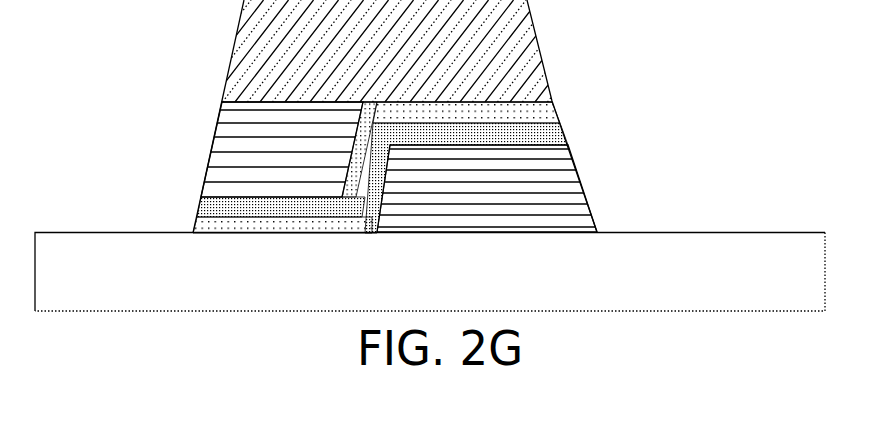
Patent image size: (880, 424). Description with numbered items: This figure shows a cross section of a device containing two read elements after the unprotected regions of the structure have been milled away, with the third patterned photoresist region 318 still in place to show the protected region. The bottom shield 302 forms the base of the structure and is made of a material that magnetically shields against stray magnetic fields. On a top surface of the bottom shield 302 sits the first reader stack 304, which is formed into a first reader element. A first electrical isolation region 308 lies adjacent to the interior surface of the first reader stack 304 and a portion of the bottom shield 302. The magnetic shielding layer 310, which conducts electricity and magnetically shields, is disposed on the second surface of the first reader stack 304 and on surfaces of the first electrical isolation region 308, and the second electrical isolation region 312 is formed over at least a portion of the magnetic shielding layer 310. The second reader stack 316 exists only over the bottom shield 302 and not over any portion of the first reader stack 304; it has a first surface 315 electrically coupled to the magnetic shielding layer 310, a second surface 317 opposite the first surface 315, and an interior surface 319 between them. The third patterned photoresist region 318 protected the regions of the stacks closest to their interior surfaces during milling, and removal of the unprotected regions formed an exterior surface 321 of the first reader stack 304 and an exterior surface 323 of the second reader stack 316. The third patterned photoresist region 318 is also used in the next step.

The bottom shield 302 is at (430, 273).
The first reader stack 304 is at (492, 198).
The first electrical isolation region 308 is at (300, 222).
The magnetic shielding layer 310 is at (249, 220).
The second electrical isolation region 312 is at (484, 100).
The first surface 315 is at (207, 198).
The second reader stack 316 is at (327, 140).
The second surface 317 is at (269, 100).
The third patterned photoresist region 318 is at (300, 51).
The interior surface 319 is at (347, 166).
The exterior surface 321 is at (578, 175).
The exterior surface 323 is at (212, 132).